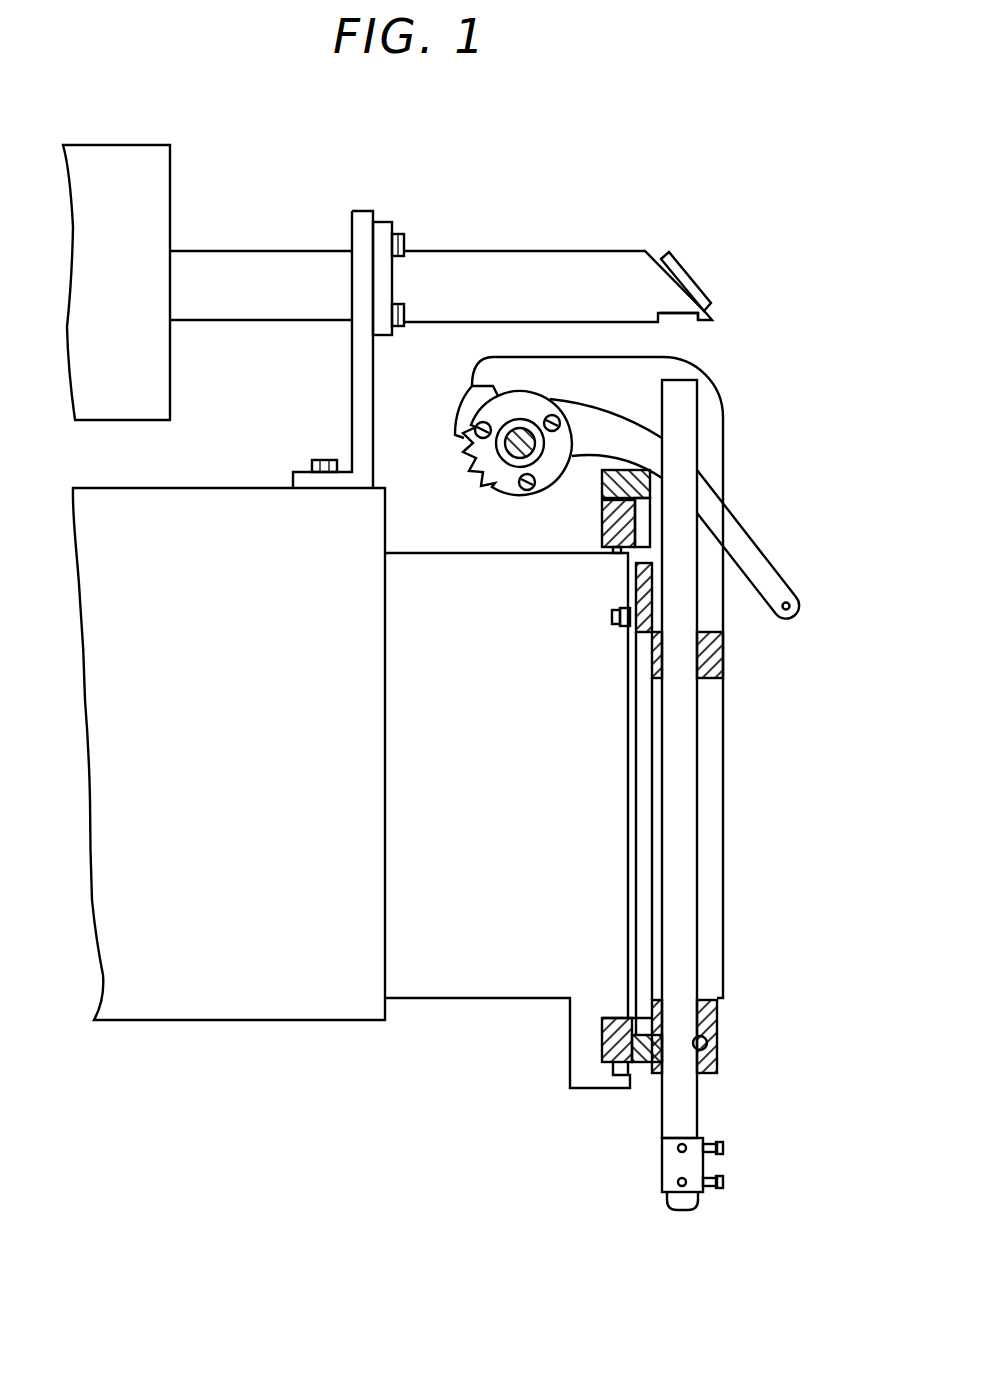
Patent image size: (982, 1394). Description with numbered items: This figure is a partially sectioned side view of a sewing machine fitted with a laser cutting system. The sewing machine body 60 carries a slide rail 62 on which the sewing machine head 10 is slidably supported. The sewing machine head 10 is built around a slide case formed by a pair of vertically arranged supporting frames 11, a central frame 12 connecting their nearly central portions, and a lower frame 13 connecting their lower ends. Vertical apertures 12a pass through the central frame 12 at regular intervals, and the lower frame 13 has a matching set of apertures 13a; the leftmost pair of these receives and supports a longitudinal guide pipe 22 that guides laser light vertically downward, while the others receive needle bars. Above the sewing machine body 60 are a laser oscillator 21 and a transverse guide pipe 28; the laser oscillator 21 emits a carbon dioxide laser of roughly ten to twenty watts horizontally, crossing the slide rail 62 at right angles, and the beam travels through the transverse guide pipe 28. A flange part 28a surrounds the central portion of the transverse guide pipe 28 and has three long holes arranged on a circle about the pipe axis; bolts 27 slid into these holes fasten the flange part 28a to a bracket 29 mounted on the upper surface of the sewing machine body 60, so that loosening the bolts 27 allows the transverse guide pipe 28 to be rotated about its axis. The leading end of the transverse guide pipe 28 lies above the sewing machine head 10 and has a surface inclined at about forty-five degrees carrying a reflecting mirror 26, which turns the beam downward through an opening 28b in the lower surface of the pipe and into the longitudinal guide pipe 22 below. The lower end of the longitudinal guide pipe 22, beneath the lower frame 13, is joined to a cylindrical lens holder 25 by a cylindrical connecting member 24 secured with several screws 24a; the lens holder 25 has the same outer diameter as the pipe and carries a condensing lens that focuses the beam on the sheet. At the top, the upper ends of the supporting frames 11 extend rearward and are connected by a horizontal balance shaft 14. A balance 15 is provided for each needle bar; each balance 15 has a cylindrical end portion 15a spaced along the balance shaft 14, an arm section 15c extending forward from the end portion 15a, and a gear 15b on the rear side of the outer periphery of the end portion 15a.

The sewing machine head 10 is at (728, 782).
The supporting frame 11 is at (717, 418).
The central frame 12 is at (717, 657).
The aperture 12a is at (650, 655).
The lower frame 13 is at (657, 1053).
The aperture 13a is at (712, 1045).
The balance shaft 14 is at (523, 427).
The balance 15 is at (800, 583).
The end portion 15a is at (550, 466).
The gear 15b is at (470, 448).
The arm section 15c is at (743, 528).
The laser oscillator 21 is at (110, 155).
The longitudinal guide pipe 22 is at (693, 1112).
The connecting member 24 is at (663, 1142).
The screw 24a is at (726, 1182).
The lens holder 25 is at (700, 1200).
The reflecting mirror 26 is at (700, 292).
The bolt 27 is at (407, 313).
The transverse guide pipe 28 is at (270, 258).
The flange part 28a is at (382, 222).
The opening 28b is at (683, 318).
The bracket 29 is at (357, 390).
The sewing machine body 60 is at (217, 1007).
The slide rail 62 is at (453, 1003).